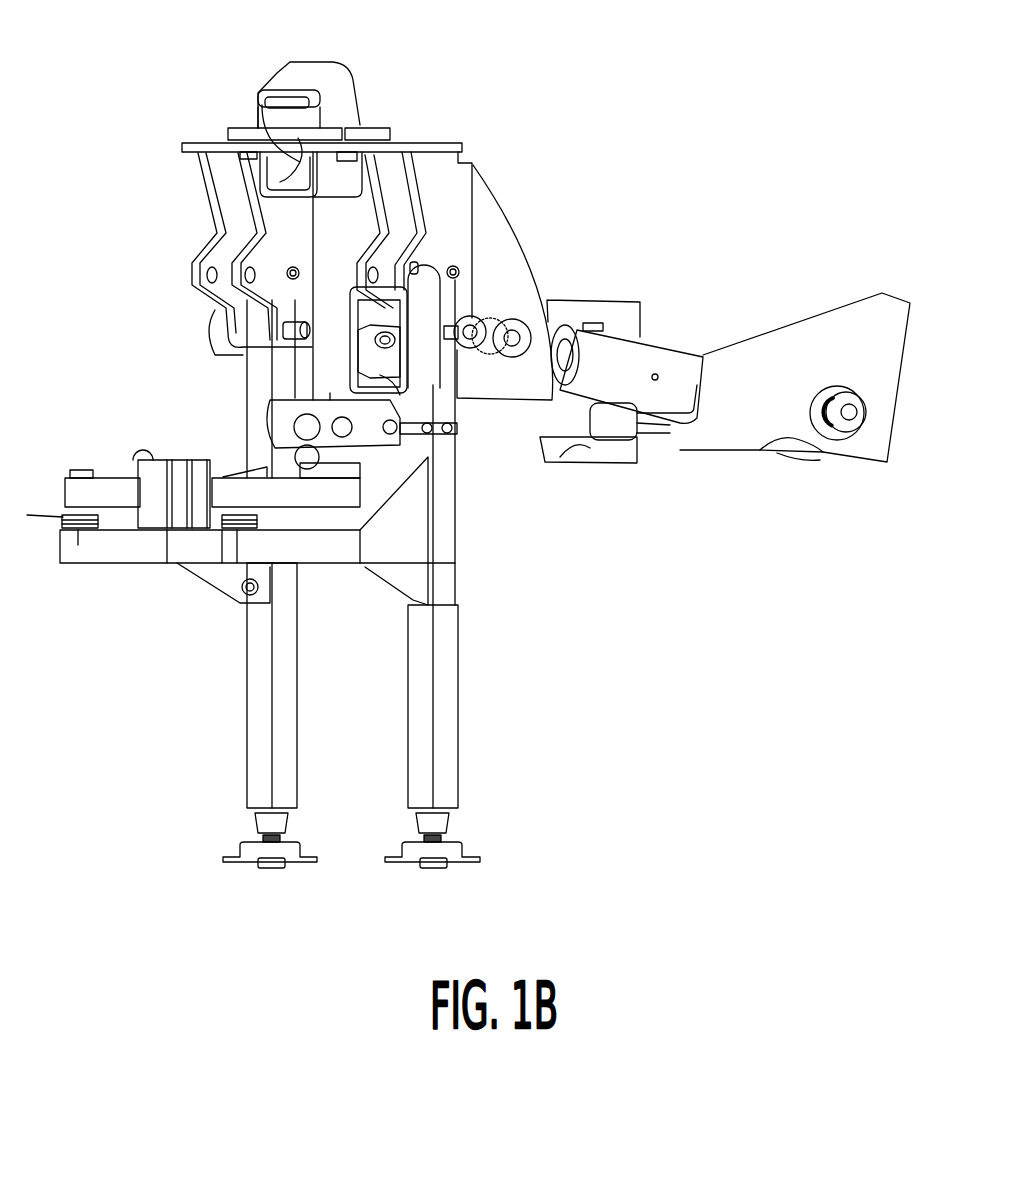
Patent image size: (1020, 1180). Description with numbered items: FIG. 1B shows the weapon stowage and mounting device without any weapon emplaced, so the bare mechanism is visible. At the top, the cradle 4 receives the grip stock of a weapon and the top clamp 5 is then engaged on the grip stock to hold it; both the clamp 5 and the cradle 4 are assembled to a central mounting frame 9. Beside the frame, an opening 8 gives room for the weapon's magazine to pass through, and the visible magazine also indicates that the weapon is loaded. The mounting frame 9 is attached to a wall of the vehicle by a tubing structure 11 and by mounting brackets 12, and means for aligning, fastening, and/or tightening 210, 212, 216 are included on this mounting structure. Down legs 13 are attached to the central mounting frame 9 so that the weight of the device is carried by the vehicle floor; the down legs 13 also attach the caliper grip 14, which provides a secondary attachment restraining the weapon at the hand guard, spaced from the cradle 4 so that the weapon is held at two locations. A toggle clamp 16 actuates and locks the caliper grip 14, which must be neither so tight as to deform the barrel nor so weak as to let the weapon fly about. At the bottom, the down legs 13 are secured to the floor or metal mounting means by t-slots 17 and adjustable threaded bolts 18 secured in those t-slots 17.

The cradle 4 is at (255, 125).
The clamp 5 is at (350, 80).
The opening 8 is at (300, 333).
The central mounting frame 9 is at (460, 198).
The tubing structure 11 is at (680, 360).
The mounting brackets 12 is at (800, 345).
The down legs 13 is at (447, 722).
The caliper grip 14 is at (403, 573).
The toggle clamp 16 is at (442, 312).
The t-slots 17 is at (465, 841).
The adjustable threaded bolts 18 is at (437, 868).
The means for aligning, fastening, and/or tightening 210 is at (475, 355).
The means for aligning, fastening, and/or tightening 212 is at (525, 357).
The means for aligning, fastening, and/or tightening 216 is at (822, 440).